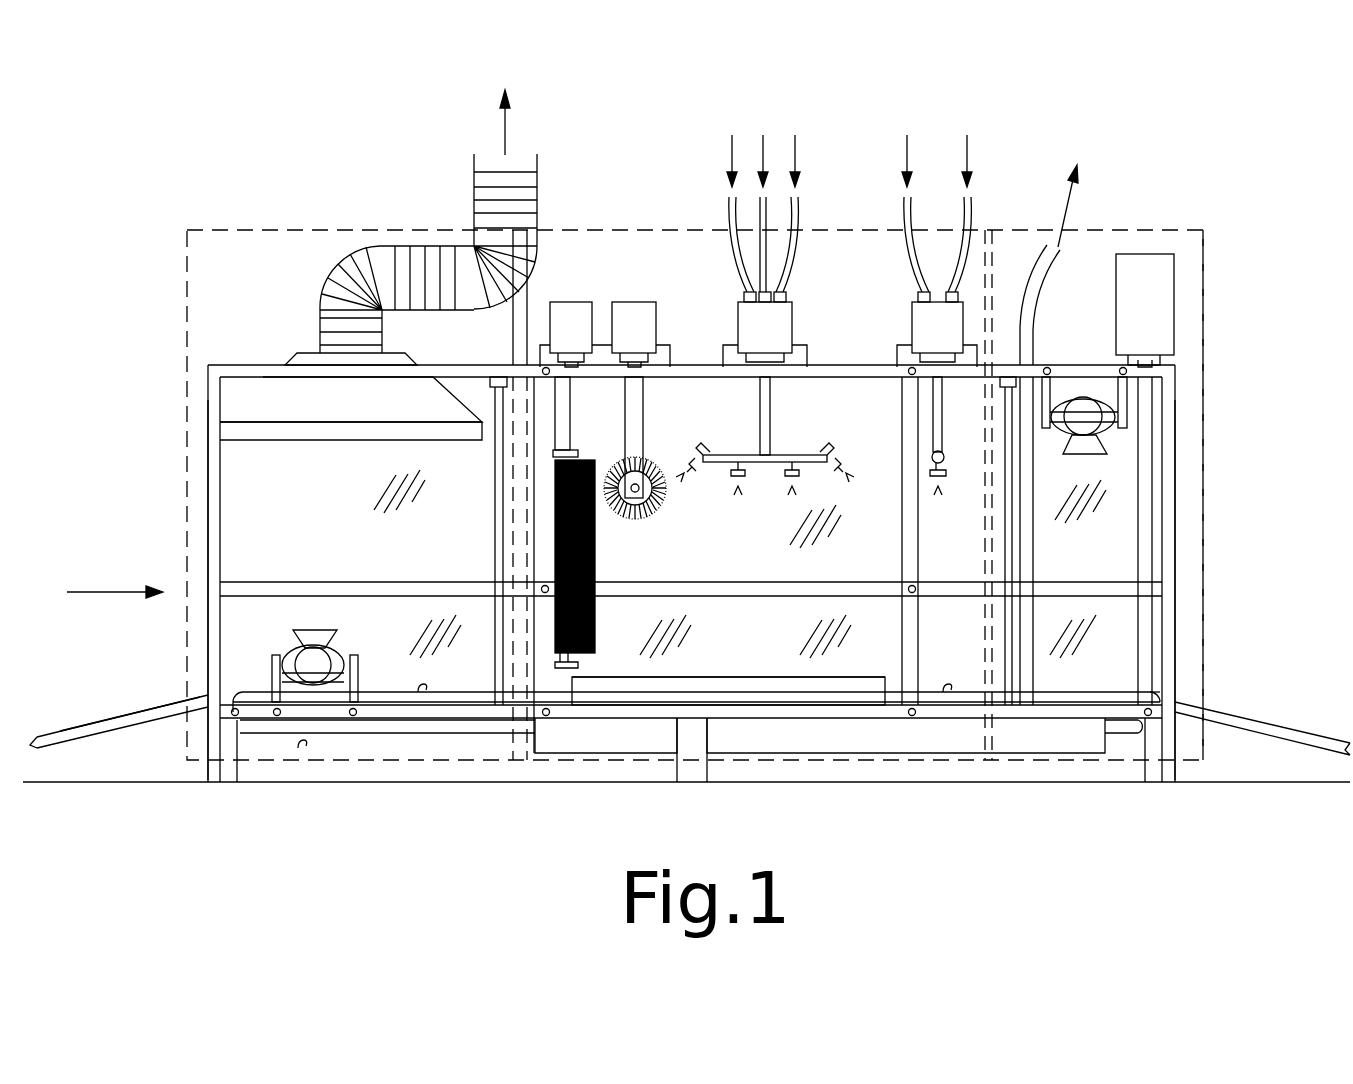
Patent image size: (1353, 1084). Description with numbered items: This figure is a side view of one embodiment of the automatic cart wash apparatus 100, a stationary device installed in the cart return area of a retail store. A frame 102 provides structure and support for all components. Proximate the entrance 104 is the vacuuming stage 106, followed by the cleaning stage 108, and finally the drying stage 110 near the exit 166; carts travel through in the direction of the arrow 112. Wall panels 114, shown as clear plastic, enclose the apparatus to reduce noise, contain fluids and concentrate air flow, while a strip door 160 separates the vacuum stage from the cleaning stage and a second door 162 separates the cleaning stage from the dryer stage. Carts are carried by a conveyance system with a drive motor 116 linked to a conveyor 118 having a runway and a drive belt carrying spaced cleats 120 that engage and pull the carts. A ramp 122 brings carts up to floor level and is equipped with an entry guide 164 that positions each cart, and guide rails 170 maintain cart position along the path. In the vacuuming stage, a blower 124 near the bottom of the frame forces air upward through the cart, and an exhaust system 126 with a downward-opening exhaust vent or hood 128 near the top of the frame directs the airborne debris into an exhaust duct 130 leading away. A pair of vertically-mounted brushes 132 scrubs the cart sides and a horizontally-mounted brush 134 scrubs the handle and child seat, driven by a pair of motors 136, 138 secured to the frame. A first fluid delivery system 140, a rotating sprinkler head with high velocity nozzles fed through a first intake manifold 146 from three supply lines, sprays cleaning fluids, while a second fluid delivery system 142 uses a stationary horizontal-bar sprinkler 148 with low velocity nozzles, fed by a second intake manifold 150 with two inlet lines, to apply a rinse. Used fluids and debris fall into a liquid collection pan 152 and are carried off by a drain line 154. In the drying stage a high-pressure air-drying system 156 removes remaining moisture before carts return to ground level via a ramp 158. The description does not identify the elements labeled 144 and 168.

The automatic cart wash apparatus 100 is at (231, 185).
The frame 102 is at (862, 370).
The entrance 104 is at (307, 230).
The vacuuming stage 106 is at (835, 230).
The cleaning stage 108 is at (1140, 230).
The drying stage 110 is at (1170, 420).
The arrow 112 is at (115, 590).
The wall panels 114 is at (832, 658).
The drive motor 116 is at (1160, 290).
The conveyor 118 is at (1105, 695).
The cleats 120 is at (298, 740).
The ramp 122 is at (140, 722).
The blower 124 is at (315, 665).
The exhaust system 126 is at (420, 232).
The exhaust vent or hood 128 is at (245, 410).
The exhaust duct 130 is at (520, 180).
The vertically-mounted brushes 132 is at (590, 652).
The horizontally-mounted brush 134 is at (635, 515).
The motor 136 is at (570, 320).
The motor 138 is at (636, 318).
The first fluid delivery system 140 is at (758, 405).
The second fluid delivery system 142 is at (930, 423).
The spray bar 144 is at (718, 462).
The first intake manifold 146 is at (750, 320).
The horizontal-bar sprinkler 148 is at (945, 470).
The second intake manifold 150 is at (955, 320).
The liquid collection pan 152 is at (925, 735).
The drain line 154 is at (1050, 275).
The high-pressure air-drying system 156 is at (1085, 415).
The ramp 158 is at (1290, 735).
The door 160 is at (485, 680).
The second door 162 is at (1013, 680).
The entry guide 164 is at (222, 530).
The exit 166 is at (1170, 497).
The ramp surface 168 is at (85, 727).
The guide rails 170 is at (758, 690).